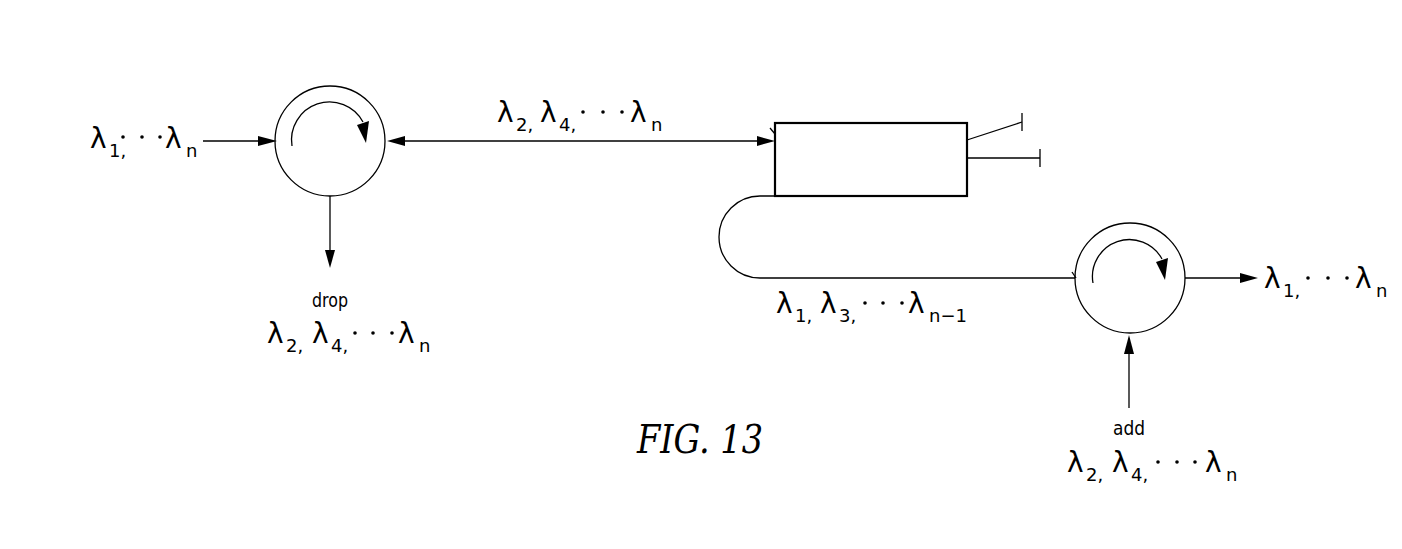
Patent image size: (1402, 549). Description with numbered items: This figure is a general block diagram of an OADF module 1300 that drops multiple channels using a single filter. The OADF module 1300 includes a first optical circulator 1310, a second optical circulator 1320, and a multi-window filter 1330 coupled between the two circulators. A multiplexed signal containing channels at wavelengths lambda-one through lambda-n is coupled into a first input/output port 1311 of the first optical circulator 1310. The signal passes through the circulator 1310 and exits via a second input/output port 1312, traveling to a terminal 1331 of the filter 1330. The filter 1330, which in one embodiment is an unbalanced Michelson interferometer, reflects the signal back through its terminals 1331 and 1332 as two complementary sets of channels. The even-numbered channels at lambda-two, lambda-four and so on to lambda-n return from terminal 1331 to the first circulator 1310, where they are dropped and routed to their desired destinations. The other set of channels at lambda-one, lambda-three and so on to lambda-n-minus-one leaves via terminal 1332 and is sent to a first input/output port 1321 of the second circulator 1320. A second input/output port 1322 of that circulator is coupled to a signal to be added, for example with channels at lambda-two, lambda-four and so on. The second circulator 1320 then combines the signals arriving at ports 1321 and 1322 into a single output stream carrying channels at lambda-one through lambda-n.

The OADF module 1300 is at (1228, 125).
The first optical circulator 1310 is at (330, 86).
The first input/output port 1311 is at (276, 131).
The second input/output port 1312 is at (386, 131).
The second optical circulator 1320 is at (1130, 223).
The first input/output port 1321 is at (1075, 268).
The second input/output port 1322 is at (1132, 336).
The multi-window filter 1330 is at (877, 123).
The terminal 1331 is at (774, 129).
The terminal 1332 is at (771, 197).